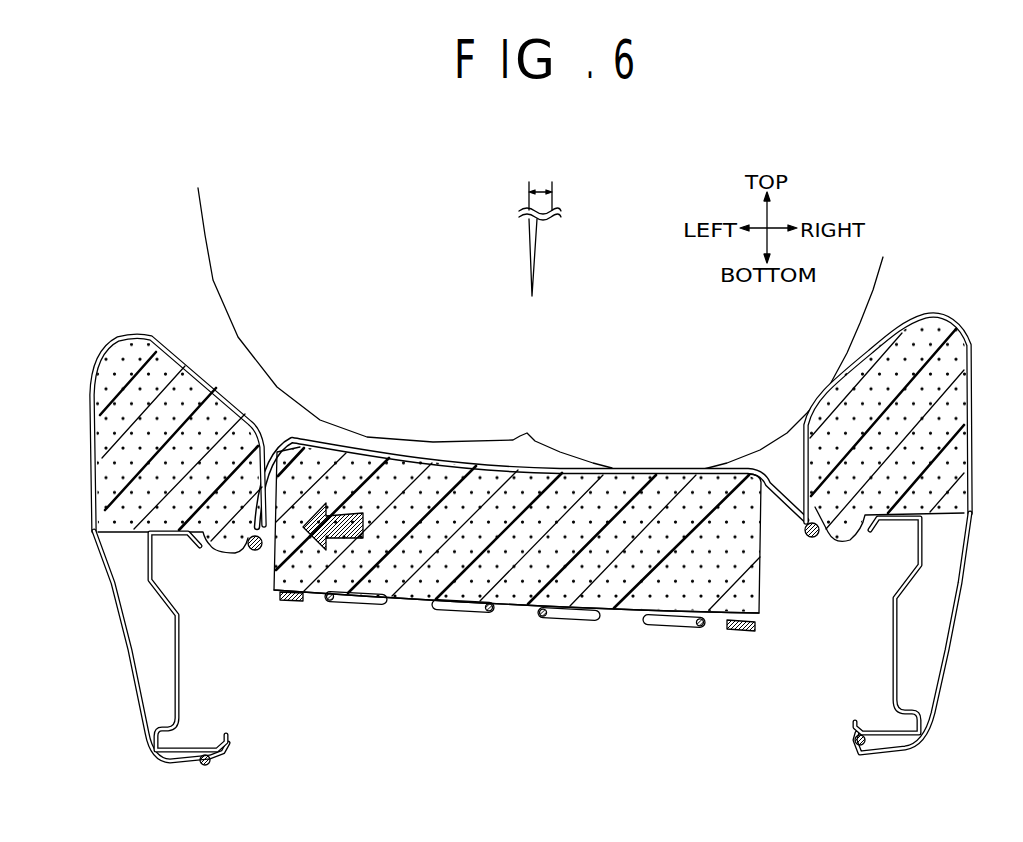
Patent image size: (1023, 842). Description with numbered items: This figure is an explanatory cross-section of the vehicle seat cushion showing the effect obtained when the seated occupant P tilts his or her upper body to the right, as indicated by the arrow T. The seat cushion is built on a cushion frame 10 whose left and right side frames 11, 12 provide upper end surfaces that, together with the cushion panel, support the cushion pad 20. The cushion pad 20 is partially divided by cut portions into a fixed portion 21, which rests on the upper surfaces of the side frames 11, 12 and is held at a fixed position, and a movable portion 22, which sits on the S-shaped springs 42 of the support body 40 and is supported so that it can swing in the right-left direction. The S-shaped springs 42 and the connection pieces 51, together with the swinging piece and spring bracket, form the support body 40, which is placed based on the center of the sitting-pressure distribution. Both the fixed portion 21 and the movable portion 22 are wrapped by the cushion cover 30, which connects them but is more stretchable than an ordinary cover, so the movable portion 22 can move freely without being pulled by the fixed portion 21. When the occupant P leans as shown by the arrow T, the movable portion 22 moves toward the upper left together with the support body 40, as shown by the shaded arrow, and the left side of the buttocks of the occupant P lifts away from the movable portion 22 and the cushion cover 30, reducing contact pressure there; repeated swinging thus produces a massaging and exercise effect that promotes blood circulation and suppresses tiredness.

The cushion frame 10 is at (160, 654).
The left side frame 11 is at (180, 650).
The right side frame 12 is at (893, 648).
The cushion pad 20 is at (268, 571).
The fixed portion 21 is at (175, 385).
The movable portion 22 is at (625, 490).
The cushion cover 30 is at (133, 333).
The support body 40 is at (704, 661).
The S-shaped springs 42 is at (458, 610).
The connection pieces 51 is at (308, 598).
The occupant P is at (215, 279).
The arrow indicating tilt direction T is at (540, 230).